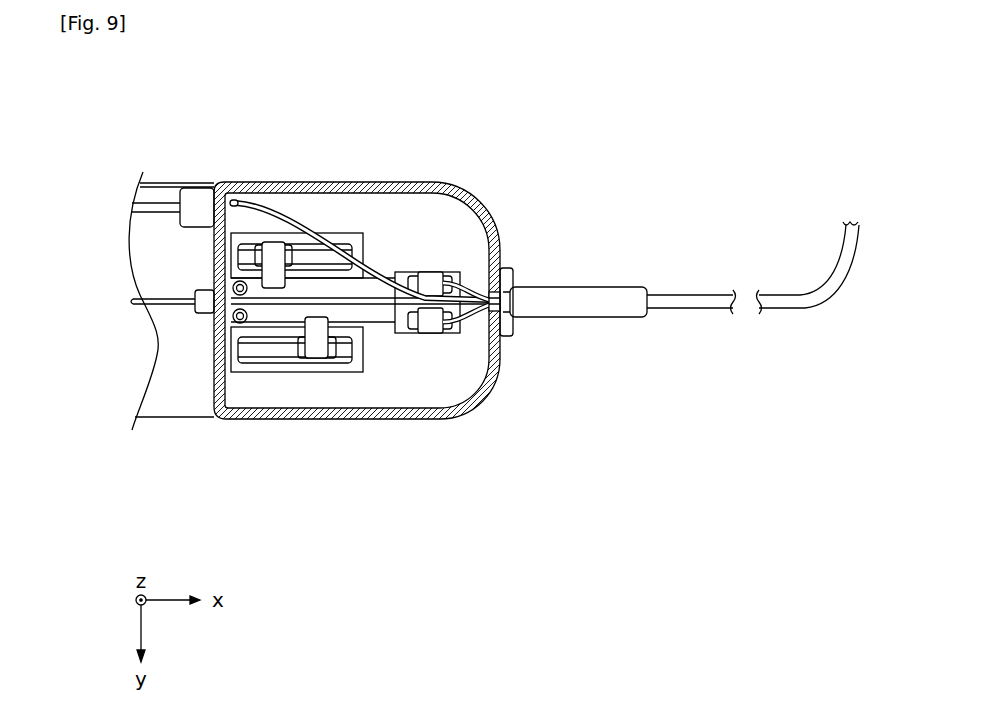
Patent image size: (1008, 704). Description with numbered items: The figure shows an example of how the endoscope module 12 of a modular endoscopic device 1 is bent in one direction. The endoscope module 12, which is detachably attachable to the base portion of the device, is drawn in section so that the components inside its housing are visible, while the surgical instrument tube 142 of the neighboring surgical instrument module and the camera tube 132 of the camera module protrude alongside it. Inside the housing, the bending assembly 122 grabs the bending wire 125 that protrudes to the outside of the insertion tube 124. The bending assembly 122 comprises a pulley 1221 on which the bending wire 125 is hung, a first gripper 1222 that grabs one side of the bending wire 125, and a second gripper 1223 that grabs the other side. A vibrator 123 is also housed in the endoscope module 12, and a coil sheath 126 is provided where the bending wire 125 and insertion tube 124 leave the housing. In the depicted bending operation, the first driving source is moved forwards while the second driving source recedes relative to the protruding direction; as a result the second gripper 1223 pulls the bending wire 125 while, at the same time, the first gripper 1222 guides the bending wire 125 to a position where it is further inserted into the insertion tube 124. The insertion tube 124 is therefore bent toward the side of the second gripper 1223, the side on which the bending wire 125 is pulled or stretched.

The modular endoscopic device 1 is at (98, 117).
The endoscope module 12 is at (431, 166).
The surgical instrument tube 142 is at (170, 304).
The bending assembly 122 is at (167, 482).
The pulley 1221 is at (237, 323).
The second gripper 1223 is at (272, 290).
The first gripper 1222 is at (317, 352).
The bending wire 125 is at (383, 322).
The vibrator 123 is at (450, 256).
The camera tube 132 is at (283, 212).
The coil sheath 126 is at (478, 318).
The insertion tube 124 is at (827, 297).